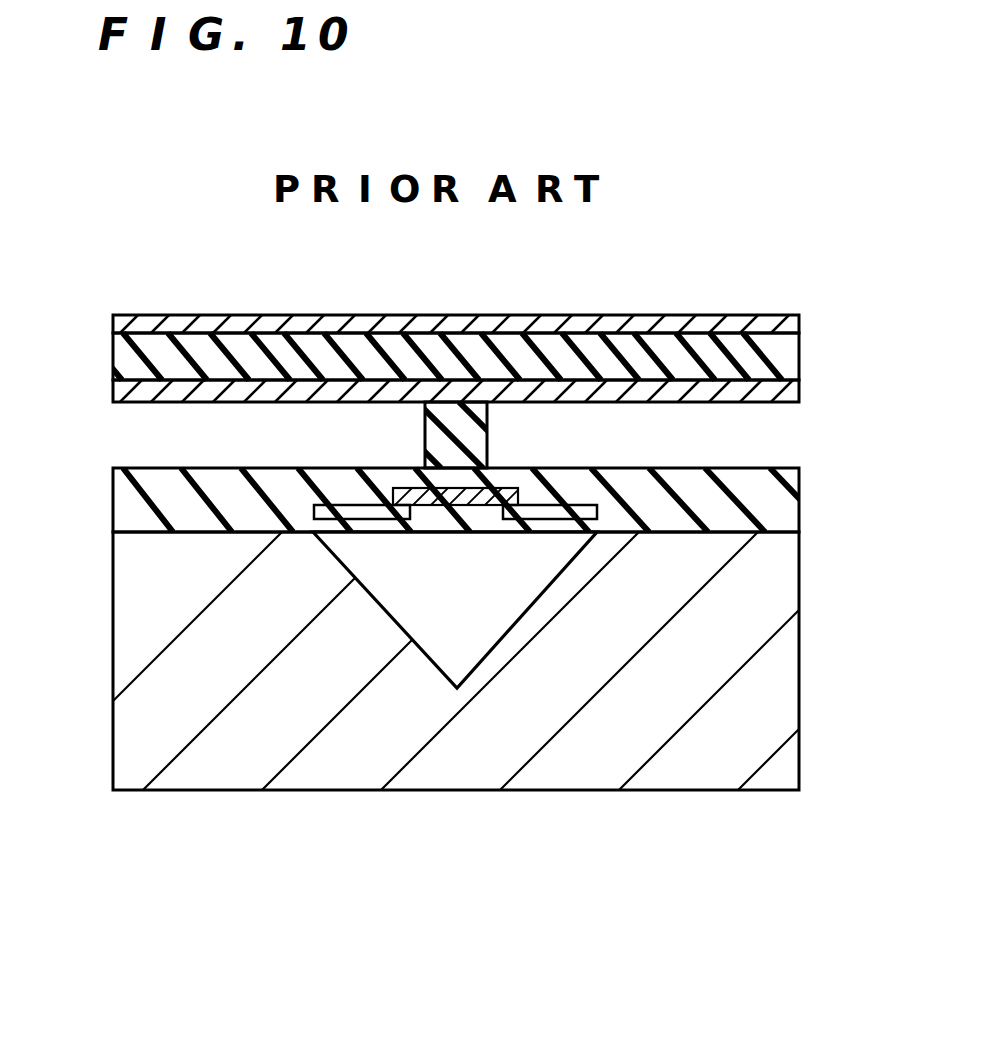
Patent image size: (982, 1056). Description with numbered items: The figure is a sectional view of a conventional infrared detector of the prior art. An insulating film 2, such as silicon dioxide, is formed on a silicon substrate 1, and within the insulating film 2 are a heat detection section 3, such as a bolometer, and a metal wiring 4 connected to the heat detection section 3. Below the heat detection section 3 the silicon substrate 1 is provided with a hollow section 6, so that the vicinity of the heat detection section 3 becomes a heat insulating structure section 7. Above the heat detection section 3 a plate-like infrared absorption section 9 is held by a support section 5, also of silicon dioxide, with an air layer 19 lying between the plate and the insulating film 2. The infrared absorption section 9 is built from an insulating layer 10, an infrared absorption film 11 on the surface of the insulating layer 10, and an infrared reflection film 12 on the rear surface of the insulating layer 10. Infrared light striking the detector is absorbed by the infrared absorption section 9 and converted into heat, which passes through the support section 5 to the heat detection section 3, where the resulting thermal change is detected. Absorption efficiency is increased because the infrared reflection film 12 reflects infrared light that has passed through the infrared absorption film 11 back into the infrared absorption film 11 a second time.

The silicon substrate 1 is at (763, 732).
The insulating film 2 is at (772, 502).
The heat detection section 3 is at (453, 500).
The metal wiring 4 is at (373, 522).
The support section 5 is at (470, 430).
The hollow section 6 is at (463, 648).
The heat insulating structure section 7 is at (428, 540).
The infrared absorption section 9 is at (490, 328).
The insulating layer 10 is at (760, 363).
The infrared absorption film 11 is at (782, 330).
The infrared reflection film 12 is at (782, 390).
The air layer 19 is at (170, 435).